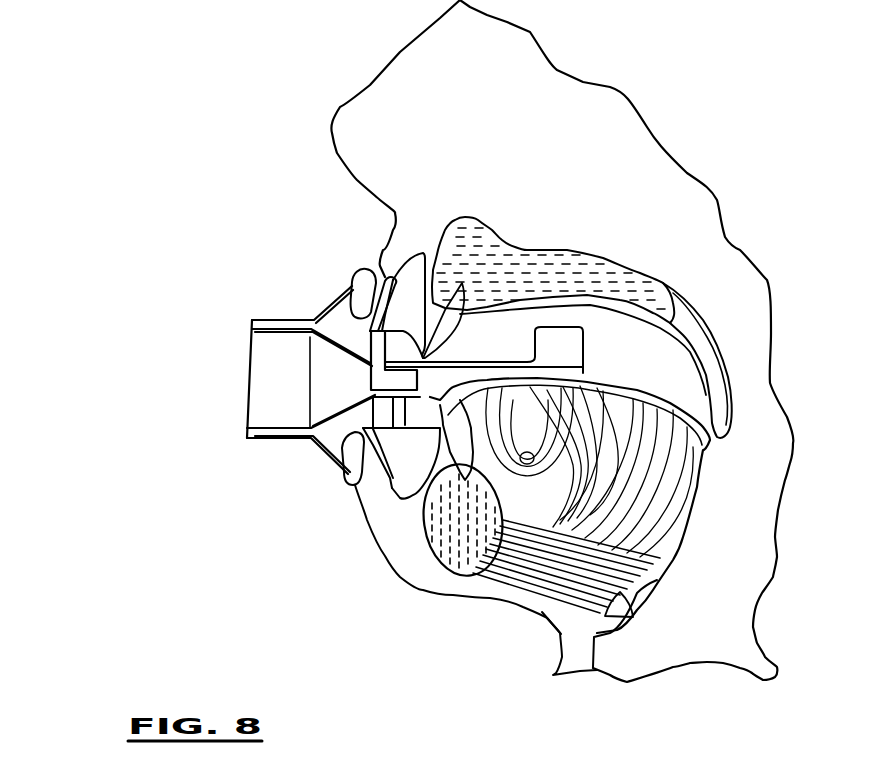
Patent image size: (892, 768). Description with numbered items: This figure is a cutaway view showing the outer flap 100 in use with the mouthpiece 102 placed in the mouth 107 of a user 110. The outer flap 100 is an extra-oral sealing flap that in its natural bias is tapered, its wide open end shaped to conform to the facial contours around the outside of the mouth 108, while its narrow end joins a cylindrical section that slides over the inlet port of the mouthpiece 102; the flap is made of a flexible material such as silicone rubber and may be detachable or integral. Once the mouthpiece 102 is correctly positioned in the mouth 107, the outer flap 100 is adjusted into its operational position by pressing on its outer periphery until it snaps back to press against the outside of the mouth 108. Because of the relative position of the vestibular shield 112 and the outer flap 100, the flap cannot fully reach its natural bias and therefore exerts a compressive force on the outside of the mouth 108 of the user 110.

The outer flap 100 is at (333, 460).
The mouthpiece 102 is at (212, 385).
The mouth 107 is at (503, 333).
The outside of the mouth 108 is at (350, 300).
The user 110 is at (394, 63).
The vestibular shield 112 is at (385, 278).